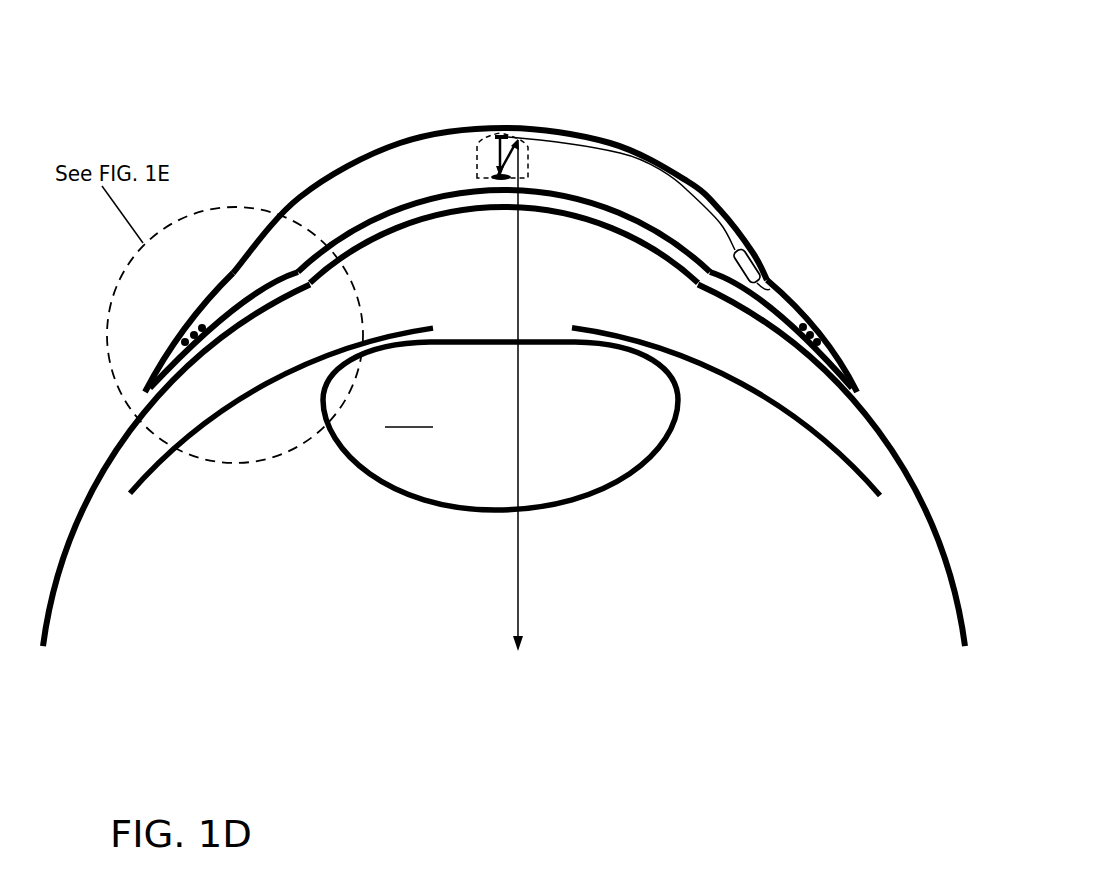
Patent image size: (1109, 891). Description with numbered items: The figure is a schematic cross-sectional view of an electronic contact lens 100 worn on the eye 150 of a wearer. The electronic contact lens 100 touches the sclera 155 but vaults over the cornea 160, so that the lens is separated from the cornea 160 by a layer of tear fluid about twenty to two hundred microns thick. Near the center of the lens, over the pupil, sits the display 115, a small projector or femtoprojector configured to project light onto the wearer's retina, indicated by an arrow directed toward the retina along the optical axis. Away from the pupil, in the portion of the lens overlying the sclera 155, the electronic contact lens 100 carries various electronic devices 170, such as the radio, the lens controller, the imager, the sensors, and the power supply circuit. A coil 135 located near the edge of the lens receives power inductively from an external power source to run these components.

The electronic contact lens 100 is at (472, 126).
The display 115 is at (532, 150).
The coil 135 is at (822, 334).
The eye 150 is at (767, 581).
The sclera 155 is at (777, 347).
The cornea 160 is at (443, 223).
The electronic devices 170 is at (757, 274).